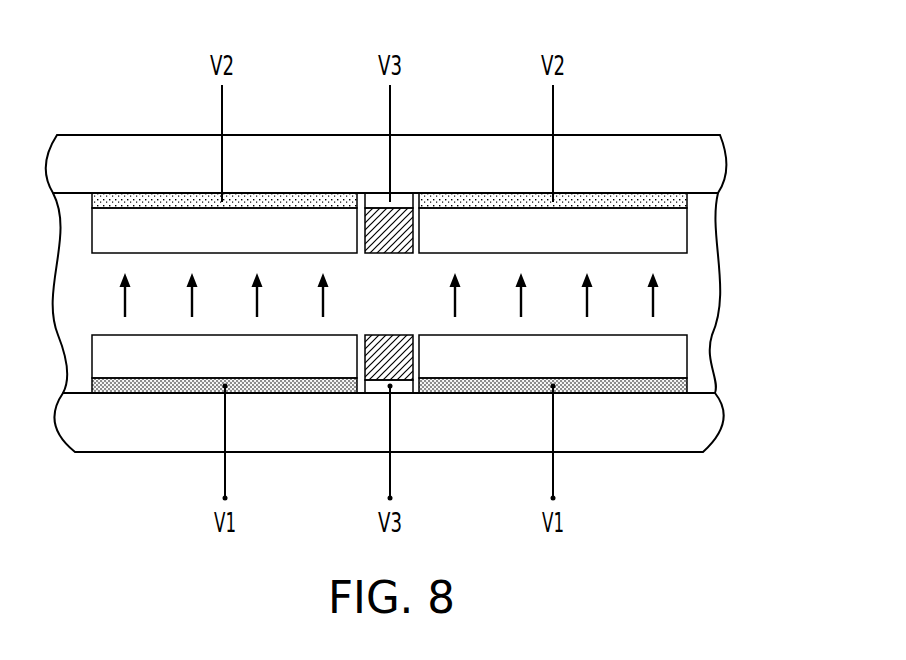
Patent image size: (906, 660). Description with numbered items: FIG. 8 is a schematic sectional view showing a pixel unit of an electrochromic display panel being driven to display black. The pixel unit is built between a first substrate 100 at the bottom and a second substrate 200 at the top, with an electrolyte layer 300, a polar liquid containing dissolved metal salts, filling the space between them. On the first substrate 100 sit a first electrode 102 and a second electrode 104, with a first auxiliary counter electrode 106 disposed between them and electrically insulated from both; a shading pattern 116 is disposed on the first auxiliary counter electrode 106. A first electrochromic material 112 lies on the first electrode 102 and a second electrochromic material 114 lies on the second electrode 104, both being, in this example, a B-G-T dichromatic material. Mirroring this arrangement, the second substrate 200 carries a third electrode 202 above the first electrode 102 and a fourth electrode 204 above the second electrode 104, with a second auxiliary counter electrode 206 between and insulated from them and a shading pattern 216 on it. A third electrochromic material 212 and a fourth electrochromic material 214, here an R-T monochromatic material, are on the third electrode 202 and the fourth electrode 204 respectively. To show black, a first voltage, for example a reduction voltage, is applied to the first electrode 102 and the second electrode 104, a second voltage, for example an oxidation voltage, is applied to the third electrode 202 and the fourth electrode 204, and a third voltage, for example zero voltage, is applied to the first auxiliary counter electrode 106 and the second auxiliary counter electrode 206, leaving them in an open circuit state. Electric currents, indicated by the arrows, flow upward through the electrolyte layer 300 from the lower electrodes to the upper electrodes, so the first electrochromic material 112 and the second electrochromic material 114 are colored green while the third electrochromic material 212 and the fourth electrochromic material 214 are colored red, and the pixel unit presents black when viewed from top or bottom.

The first substrate 100 is at (688, 426).
The first electrode 102 is at (128, 395).
The second electrode 104 is at (653, 386).
The first auxiliary counter electrode 106 is at (400, 388).
The first electrochromic material 112 is at (290, 360).
The second electrochromic material 114 is at (487, 357).
The shading pattern 116 is at (378, 368).
The second substrate 200 is at (690, 167).
The third electrode 202 is at (128, 200).
The fourth electrode 204 is at (652, 200).
The second auxiliary counter electrode 206 is at (401, 200).
The third electrochromic material 212 is at (293, 225).
The fourth electrochromic material 214 is at (487, 225).
The shading pattern 216 is at (380, 217).
The electrolyte layer 300 is at (683, 293).